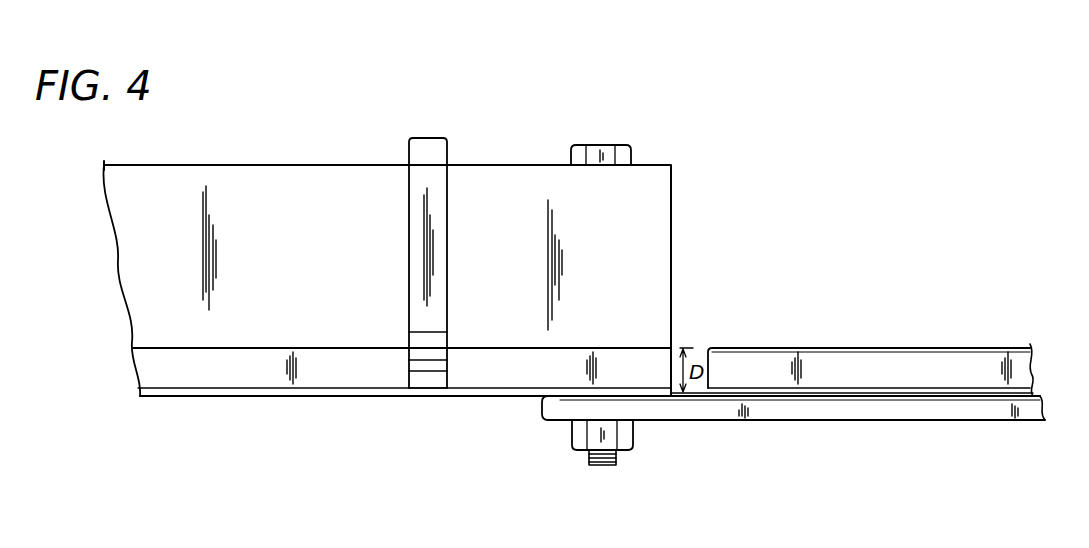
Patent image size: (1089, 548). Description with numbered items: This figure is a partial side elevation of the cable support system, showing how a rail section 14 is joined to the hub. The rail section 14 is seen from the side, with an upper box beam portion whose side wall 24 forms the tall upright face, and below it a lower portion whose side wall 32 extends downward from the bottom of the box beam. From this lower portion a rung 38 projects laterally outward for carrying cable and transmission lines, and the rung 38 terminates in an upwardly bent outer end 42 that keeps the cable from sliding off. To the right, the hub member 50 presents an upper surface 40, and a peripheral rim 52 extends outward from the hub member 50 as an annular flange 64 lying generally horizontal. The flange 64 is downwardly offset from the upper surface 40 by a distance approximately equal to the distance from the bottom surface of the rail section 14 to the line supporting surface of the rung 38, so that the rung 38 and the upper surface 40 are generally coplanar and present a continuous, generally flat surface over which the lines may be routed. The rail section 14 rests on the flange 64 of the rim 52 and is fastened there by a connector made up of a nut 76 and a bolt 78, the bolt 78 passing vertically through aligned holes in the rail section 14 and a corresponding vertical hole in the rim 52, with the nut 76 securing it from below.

The rail section 14 is at (671, 165).
The side wall 24 is at (650, 262).
The side wall 32 is at (652, 362).
The rung 38 is at (423, 366).
The upper surface 40 is at (905, 348).
The upwardly bent outer end 42 is at (447, 152).
The hub member 50 is at (752, 360).
The peripheral rim 52 is at (540, 408).
The annular flange 64 is at (775, 410).
The nut 76 is at (624, 440).
The bolt 78 is at (604, 160).